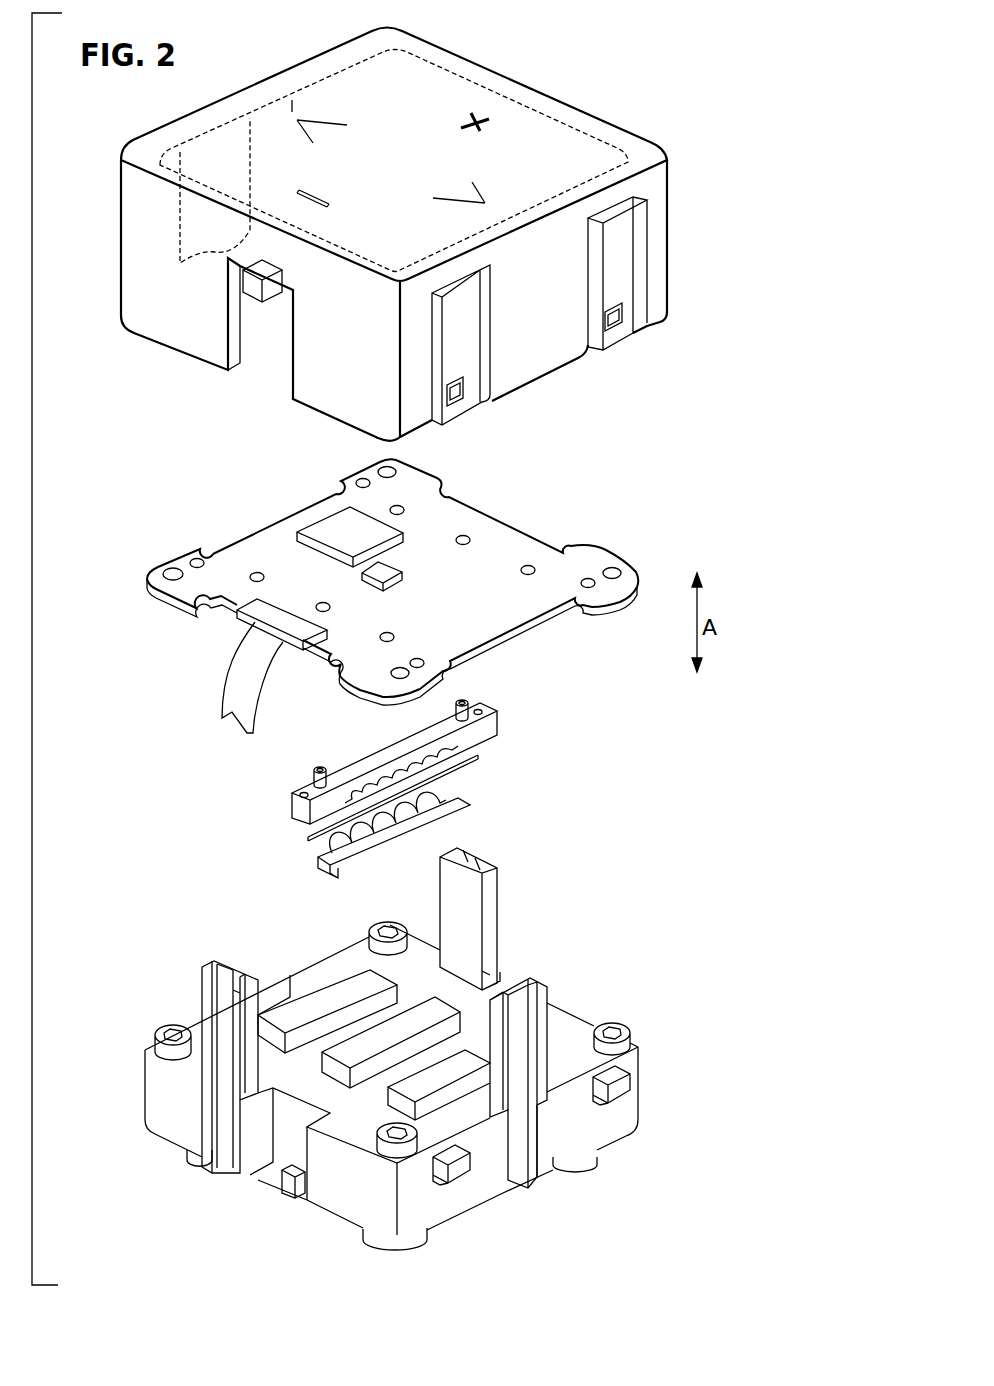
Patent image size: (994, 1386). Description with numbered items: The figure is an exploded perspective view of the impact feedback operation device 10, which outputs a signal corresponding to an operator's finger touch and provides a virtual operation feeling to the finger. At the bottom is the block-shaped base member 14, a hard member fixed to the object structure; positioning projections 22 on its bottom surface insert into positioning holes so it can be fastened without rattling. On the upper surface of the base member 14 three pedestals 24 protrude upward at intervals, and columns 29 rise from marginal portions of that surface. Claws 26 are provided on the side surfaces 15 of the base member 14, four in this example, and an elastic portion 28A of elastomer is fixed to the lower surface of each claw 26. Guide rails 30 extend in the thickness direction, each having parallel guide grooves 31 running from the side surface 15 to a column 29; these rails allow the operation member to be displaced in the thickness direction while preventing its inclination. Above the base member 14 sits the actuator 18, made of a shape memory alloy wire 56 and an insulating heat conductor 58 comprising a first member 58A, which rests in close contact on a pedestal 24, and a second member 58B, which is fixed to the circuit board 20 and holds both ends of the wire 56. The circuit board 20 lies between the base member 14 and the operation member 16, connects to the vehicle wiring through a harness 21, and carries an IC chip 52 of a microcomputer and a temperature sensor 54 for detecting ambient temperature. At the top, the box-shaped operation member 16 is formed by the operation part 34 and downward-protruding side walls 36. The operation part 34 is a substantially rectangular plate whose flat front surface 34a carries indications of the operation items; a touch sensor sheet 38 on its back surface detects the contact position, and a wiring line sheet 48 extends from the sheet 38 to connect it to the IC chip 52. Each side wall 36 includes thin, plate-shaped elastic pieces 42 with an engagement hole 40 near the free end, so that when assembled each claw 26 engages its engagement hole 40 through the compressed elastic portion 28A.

The impact feedback operation device 10 is at (118, 100).
The base member 14 is at (415, 1043).
The side surface 15 is at (497, 1188).
The operation member 16 is at (391, 240).
The actuator 18 is at (440, 781).
The circuit board 20 is at (392, 596).
The harness 21 is at (232, 688).
The positioning projection 22 is at (573, 1168).
The pedestal 24 is at (420, 1010).
The claw 26 is at (558, 1166).
The elastic portion 28A is at (601, 1104).
The column 29 is at (383, 1000).
The guide rail 30 is at (383, 1000).
The guide groove 31 is at (482, 856).
The operation part 34 is at (518, 143).
The front surface 34a is at (292, 110).
The side wall 36 is at (572, 358).
The touch sensor sheet 38 is at (265, 110).
The engagement hole 40 is at (617, 328).
The elastic piece 42 is at (623, 261).
The wiring line sheet 48 is at (180, 220).
The IC chip 52 is at (325, 528).
The temperature sensor 54 is at (388, 576).
The shape memory alloy wire 56 is at (312, 838).
The insulating heat conductor 58 is at (448, 789).
The first member 58A is at (443, 833).
The second member 58B is at (487, 728).